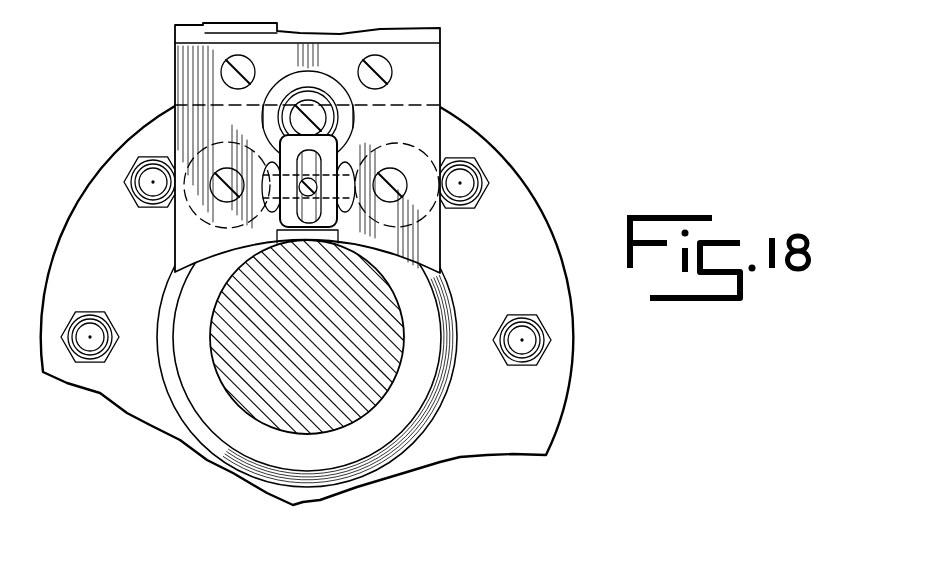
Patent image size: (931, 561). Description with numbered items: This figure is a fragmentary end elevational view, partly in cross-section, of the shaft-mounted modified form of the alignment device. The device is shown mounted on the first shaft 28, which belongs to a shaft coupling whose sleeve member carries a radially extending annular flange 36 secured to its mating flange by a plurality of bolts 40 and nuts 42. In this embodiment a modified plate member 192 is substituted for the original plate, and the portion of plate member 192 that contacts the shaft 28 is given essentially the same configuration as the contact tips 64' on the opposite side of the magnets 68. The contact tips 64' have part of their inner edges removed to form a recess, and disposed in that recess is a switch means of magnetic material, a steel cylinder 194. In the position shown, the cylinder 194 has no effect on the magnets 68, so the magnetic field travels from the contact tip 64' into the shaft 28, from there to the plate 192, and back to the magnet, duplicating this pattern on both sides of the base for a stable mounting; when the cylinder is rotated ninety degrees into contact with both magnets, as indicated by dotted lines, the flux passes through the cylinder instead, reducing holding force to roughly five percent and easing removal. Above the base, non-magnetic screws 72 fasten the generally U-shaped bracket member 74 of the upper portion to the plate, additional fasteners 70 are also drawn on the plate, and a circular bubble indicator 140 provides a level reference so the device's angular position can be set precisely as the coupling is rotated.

The first shaft 28 is at (281, 415).
The annular flange 36 is at (543, 207).
The bolt 40 is at (93, 344).
The nut 42 is at (86, 311).
The contact tip 64' is at (348, 117).
The magnet 68 is at (192, 157).
The lower screw 70 is at (221, 195).
The screw 72 is at (257, 73).
The U-shaped bracket member 74 is at (183, 33).
The circular bubble indicator 140 is at (357, 117).
The plate member 192 is at (175, 88).
The steel cylinder 194 is at (273, 222).